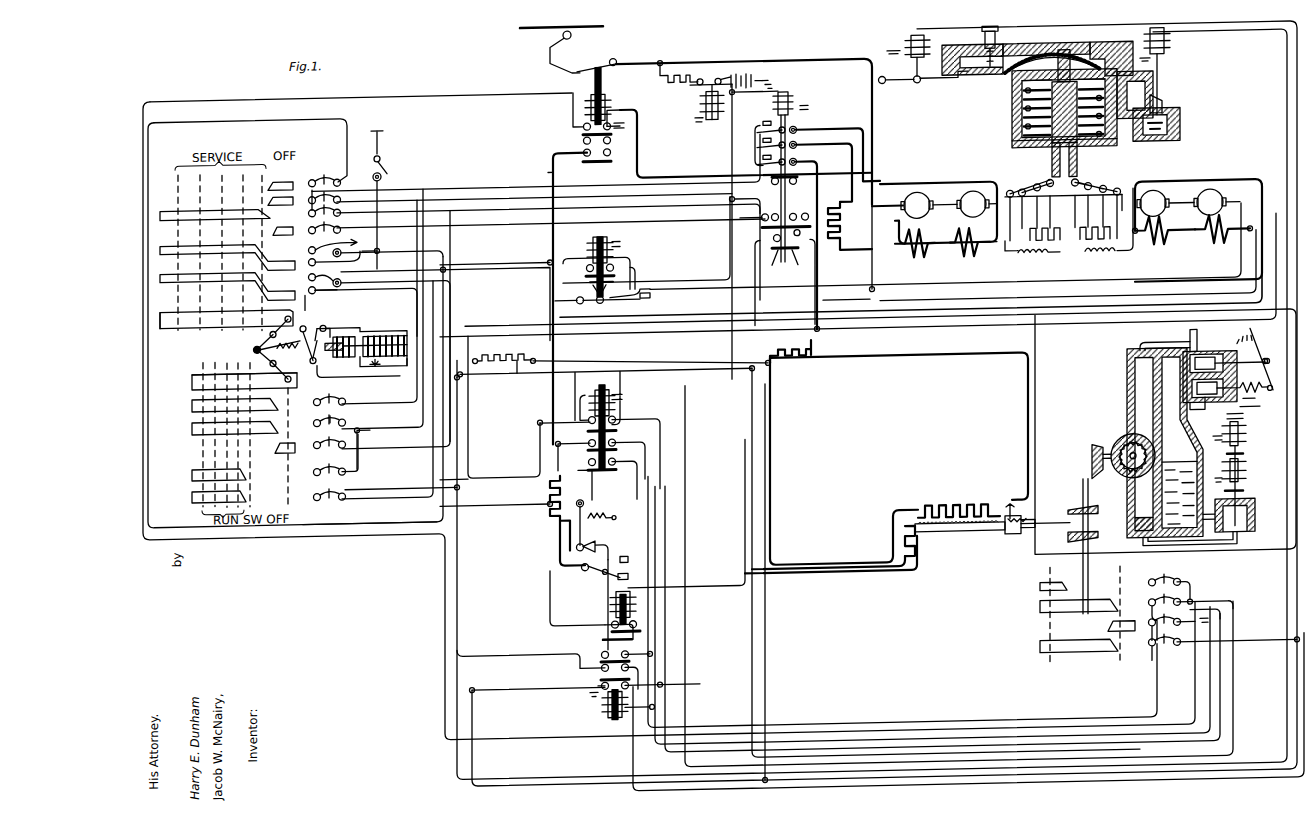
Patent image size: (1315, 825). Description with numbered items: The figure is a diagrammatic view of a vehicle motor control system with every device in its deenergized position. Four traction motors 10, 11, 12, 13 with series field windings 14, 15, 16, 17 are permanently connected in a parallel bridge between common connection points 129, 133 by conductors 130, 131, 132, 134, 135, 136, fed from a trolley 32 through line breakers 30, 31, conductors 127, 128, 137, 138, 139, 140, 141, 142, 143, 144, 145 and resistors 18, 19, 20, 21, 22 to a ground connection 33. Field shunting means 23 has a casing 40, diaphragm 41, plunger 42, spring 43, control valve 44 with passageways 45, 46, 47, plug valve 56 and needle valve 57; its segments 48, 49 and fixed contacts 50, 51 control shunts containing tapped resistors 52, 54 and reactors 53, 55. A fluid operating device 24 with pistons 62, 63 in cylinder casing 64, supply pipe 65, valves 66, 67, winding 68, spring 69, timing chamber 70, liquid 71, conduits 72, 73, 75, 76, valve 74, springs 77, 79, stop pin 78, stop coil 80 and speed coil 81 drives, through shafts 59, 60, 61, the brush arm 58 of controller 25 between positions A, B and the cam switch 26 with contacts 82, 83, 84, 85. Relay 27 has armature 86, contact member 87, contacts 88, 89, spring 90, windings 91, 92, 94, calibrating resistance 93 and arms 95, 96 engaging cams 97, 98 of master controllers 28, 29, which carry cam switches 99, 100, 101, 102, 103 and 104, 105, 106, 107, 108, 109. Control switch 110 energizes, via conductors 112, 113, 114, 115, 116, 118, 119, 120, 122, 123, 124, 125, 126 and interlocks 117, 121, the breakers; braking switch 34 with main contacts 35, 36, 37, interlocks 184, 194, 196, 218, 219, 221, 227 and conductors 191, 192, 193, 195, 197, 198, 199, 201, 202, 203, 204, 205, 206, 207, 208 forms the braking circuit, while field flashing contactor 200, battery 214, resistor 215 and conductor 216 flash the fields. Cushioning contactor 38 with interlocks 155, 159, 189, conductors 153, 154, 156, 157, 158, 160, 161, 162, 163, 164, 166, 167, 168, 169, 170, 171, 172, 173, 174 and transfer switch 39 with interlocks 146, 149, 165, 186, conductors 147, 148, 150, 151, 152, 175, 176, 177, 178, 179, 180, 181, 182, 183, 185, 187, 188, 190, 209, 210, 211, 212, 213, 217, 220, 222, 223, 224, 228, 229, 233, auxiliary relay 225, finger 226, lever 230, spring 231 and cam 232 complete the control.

The traction motor 10 is at (1204, 202).
The traction motor 11 is at (1153, 203).
The traction motor 12 is at (965, 204).
The traction motor 13 is at (917, 205).
The series field winding 14 is at (1222, 232).
The series field winding 15 is at (1155, 232).
The series field winding 16 is at (968, 232).
The series field winding 17 is at (932, 249).
The motor controlling resistor 18 is at (959, 502).
The motor controlling resistor 19 is at (916, 559).
The motor controlling resistor 20 is at (548, 508).
The motor controlling resistor 21 is at (818, 368).
The motor controlling resistor 22 is at (842, 239).
The field shunting means 23 is at (978, 118).
The fluid pressure operating device 24 is at (1111, 392).
The controller 25 is at (982, 551).
The cam switch 26 is at (1028, 609).
The accelerating and decelerating relay 27 is at (341, 368).
The master accelerating controller 28 is at (181, 461).
The master braking controller 29 is at (171, 203).
The line circuit breaker 30 is at (600, 83).
The line circuit breaker 31 is at (603, 304).
The trolley 32 is at (548, 42).
The ground connection 33 is at (376, 367).
The braking switch 34 is at (777, 100).
The main contact 35 is at (760, 126).
The main contact 36 is at (760, 141).
The main contact 37 is at (760, 157).
The cushioning contactor 38 is at (615, 470).
The transfer switch 39 is at (608, 585).
The casing 40 is at (1012, 141).
The flexible diaphragm 41 is at (1052, 50).
The plunger 42 is at (1012, 90).
The spring 43 is at (1012, 118).
The electrical control valve 44 is at (1161, 62).
The passageway 45 is at (1130, 102).
The exhaust passageway 46 is at (1115, 50).
The supply passageway 47 is at (1180, 130).
The conducting segment 48 is at (1030, 185).
The conducting segment 49 is at (1098, 185).
The fixed contacts 50 is at (1005, 190).
The fixed contacts 51 is at (1122, 190).
The tapped resistor 52 is at (1045, 232).
The reactor 53 is at (1037, 246).
The tapped resistor 54 is at (1085, 235).
The reactor 55 is at (1085, 256).
The plug valve 56 is at (952, 84).
The adjustable needle valve 57 is at (990, 29).
The brush arm 58 is at (1010, 495).
The rotatable shaft 59 is at (1045, 534).
The intermediate shaft 60 is at (1089, 501).
The operating shaft 61 is at (1108, 450).
The piston 62 is at (1143, 440).
The piston 63 is at (1135, 521).
The cylinder casing 64 is at (1127, 412).
The supply pipe 65 is at (1195, 338).
The double acting valve 66 is at (1256, 368).
The double acting valve 67 is at (1256, 392).
The operating winding 68 is at (1258, 400).
The spring 69 is at (1246, 340).
The timing chamber 70 is at (1190, 432).
The incompressible liquid 71 is at (1175, 462).
The conduit 72 is at (1215, 510).
The conduit 73 is at (1143, 545).
The valve 74 is at (1255, 521).
The conduit 75 is at (1160, 342).
The conduit 76 is at (1202, 416).
The spring 77 is at (1243, 493).
The stop pin 78 is at (1243, 452).
The spring 79 is at (1243, 424).
The stop coil 80 is at (1228, 481).
The speed coil 81 is at (1228, 442).
The contacts 82 is at (1150, 580).
The contacts 83 is at (1150, 598).
The contacts 84 is at (1150, 616).
The contacts 85 is at (1150, 636).
The armature 86 is at (392, 332).
The contact member 87 is at (318, 323).
The front contact 88 is at (297, 344).
The back contact 89 is at (328, 328).
The spring 90 is at (303, 356).
The series winding 91 is at (356, 357).
The series winding 92 is at (405, 367).
The calibrating resistance 93 is at (510, 368).
The shunt winding 94 is at (322, 336).
The adjusting arm 95 is at (271, 336).
The adjusting arm 96 is at (268, 358).
The cam 97 is at (165, 328).
The cam 98 is at (200, 379).
The cam switch 99 is at (321, 397).
The cam switch 100 is at (319, 419).
The cam switch 101 is at (319, 440).
The cam switch 102 is at (325, 455).
The cam switch 103 is at (319, 491).
The cam switch 104 is at (319, 176).
The cam switch 105 is at (318, 210).
The cam switch 106 is at (307, 208).
The cam switch 107 is at (338, 227).
The cam switch 108 is at (326, 244).
The cam switch 109 is at (318, 277).
The control switch 110 is at (383, 168).
The conductor 112 is at (378, 187).
The conductor 113 is at (383, 243).
The conductor 114 is at (362, 262).
The conductor 115 is at (395, 298).
The conductor 116 is at (425, 420).
The interlock contacts 117 is at (773, 175).
The conductor 118 is at (637, 163).
The conductor 119 is at (590, 96).
The conductor 120 is at (422, 105).
The interlock contacts 121 is at (583, 124).
The conductor 122 is at (336, 258).
The conductor 123 is at (420, 278).
The conductor 124 is at (343, 416).
The conductor 125 is at (385, 437).
The conductor 126 is at (580, 252).
The conductor 127 is at (635, 67).
The conductor 128 is at (757, 70).
The common connection point 129 is at (876, 215).
The conductor 130 is at (887, 218).
The conductor 131 is at (987, 229).
The conductor 132 is at (872, 268).
The common connection point 133 is at (876, 286).
The conductor 134 is at (872, 253).
The conductor 135 is at (1141, 223).
The conductor 136 is at (1215, 306).
The conductor 137 is at (845, 305).
The conductor 138 is at (700, 303).
The conductor 139 is at (580, 304).
The conductor 140 is at (557, 360).
The conductor 141 is at (560, 548).
The conductor 142 is at (820, 589).
The conductor 143 is at (900, 376).
The conductor 144 is at (695, 377).
The conductor 145 is at (517, 385).
The interlock contacts 146 is at (585, 268).
The conductor 147 is at (640, 268).
The conductor 148 is at (662, 686).
The interlock contacts 149 is at (596, 684).
The conductor 150 is at (515, 700).
The conductor 151 is at (473, 720).
The conductor 152 is at (1298, 348).
The conductor 153 is at (358, 465).
The conductor 154 is at (419, 485).
The interlock contacts 155 is at (585, 154).
The conductor 156 is at (545, 181).
The conductor 157 is at (588, 430).
The conductor 158 is at (590, 400).
The interlock contacts 159 is at (612, 422).
The conductor 160 is at (634, 443).
The conductor 161 is at (603, 382).
The conductor 162 is at (468, 444).
The conductor 163 is at (515, 667).
The conductor 164 is at (590, 660).
The interlock contacts 165 is at (622, 668).
The conductor 166 is at (633, 802).
The conductor 167 is at (1286, 766).
The conductor 168 is at (548, 487).
The conductor 169 is at (370, 516).
The conductor 170 is at (396, 485).
The conductor 171 is at (325, 372).
The conductor 172 is at (305, 302).
The conductor 173 is at (347, 157).
The conductor 174 is at (496, 345).
The conductor 175 is at (820, 575).
The conductor 176 is at (708, 385).
The conductor 177 is at (748, 442).
The conductor 178 is at (1192, 583).
The conductor 179 is at (1222, 613).
The conductor 180 is at (622, 710).
The conductor 181 is at (666, 705).
The conductor 182 is at (1258, 645).
The conductor 183 is at (370, 335).
The interlock contacts 184 is at (785, 282).
The conductor 185 is at (1283, 153).
The interlock contacts 186 is at (613, 652).
The conductor 187 is at (650, 645).
The conductor 188 is at (645, 503).
The interlock contacts 189 is at (588, 443).
The conductor 190 is at (650, 453).
The conductor 191 is at (459, 421).
The conductor 192 is at (432, 290).
The conductor 193 is at (436, 178).
The interlock contacts 194 is at (583, 134).
The conductor 195 is at (622, 245).
The interlock contacts 196 is at (588, 284).
The conductor 197 is at (700, 295).
The conductor 198 is at (730, 143).
The conductor 199 is at (768, 93).
The field flashing contactor 200 is at (704, 97).
The conductor 201 is at (850, 226).
The conductor 202 is at (812, 140).
The conductor 203 is at (846, 278).
The conductor 204 is at (922, 183).
The conductor 205 is at (690, 186).
The conductor 206 is at (823, 355).
The conductor 207 is at (820, 330).
The conductor 208 is at (1192, 181).
The conductor 209 is at (557, 374).
The conductor 210 is at (418, 207).
The conductor 211 is at (478, 279).
The conductor 212 is at (475, 386).
The conductor 213 is at (626, 344).
The field flashing battery 214 is at (727, 70).
The current limiting resistor 215 is at (668, 82).
The conductor 216 is at (658, 72).
The conductor 217 is at (730, 196).
The interlock contact 218 is at (762, 213).
The interlock contact 219 is at (795, 212).
The conductor 220 is at (752, 354).
The interlock contact 221 is at (799, 236).
The conductor 222 is at (613, 219).
The conductor 223 is at (340, 193).
The conductor 224 is at (416, 228).
The auxiliary relay 225 is at (612, 608).
The finger 226 is at (640, 641).
The interlock contact 227 is at (735, 217).
The conductor 228 is at (704, 601).
The conductor 229 is at (550, 588).
The pivoted lever 230 is at (582, 487).
The spring 231 is at (595, 521).
The cam 232 is at (612, 536).
The conductor 233 is at (725, 764).
The position A is at (1012, 532).
The position B is at (959, 541).